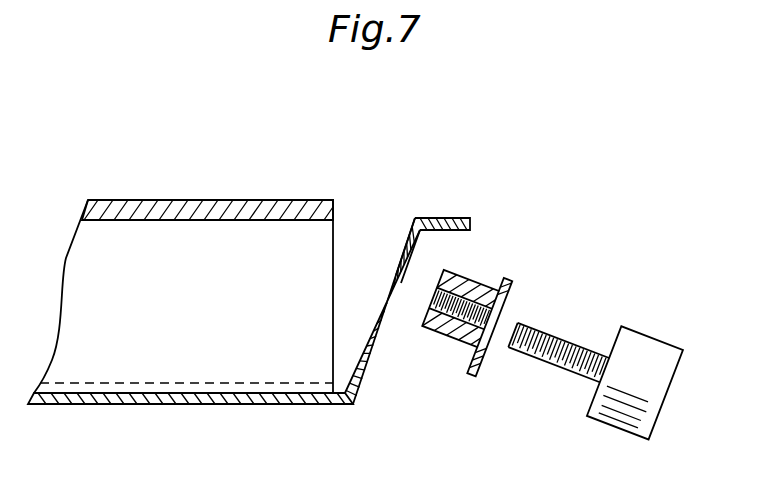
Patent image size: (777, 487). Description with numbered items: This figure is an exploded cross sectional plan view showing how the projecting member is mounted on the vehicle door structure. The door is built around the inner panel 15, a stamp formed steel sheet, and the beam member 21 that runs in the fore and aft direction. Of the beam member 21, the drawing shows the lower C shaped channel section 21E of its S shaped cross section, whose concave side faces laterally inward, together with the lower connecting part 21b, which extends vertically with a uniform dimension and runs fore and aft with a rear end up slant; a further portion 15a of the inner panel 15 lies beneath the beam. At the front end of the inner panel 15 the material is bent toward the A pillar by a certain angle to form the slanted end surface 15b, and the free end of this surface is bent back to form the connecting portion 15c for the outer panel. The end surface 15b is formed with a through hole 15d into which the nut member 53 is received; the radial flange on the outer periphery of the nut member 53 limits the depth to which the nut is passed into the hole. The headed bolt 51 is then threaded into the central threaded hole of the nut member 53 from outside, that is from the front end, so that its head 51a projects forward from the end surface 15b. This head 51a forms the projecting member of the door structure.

The beam member 21 is at (283, 186).
The lower C shaped channel section 21E is at (154, 237).
The lower connecting part 21b is at (168, 395).
The inner panel 15 is at (366, 389).
The bracket bottom flange 15a is at (106, 405).
The slanted end surface 15b is at (379, 345).
The connecting portion 15c is at (441, 220).
The through hole 15d is at (394, 268).
The nut member 53 is at (522, 304).
The headed bolt 51 is at (643, 344).
The head 51a is at (663, 362).